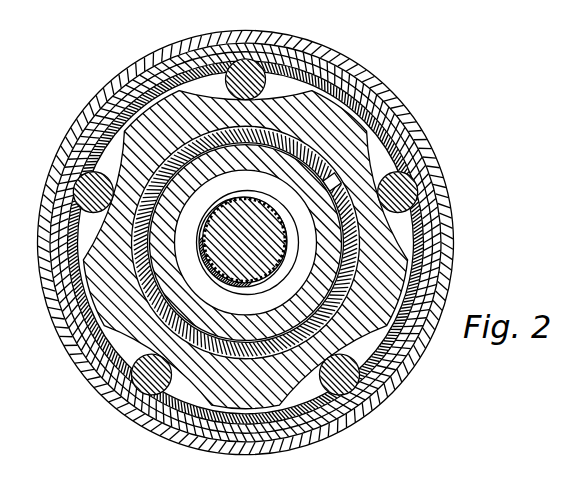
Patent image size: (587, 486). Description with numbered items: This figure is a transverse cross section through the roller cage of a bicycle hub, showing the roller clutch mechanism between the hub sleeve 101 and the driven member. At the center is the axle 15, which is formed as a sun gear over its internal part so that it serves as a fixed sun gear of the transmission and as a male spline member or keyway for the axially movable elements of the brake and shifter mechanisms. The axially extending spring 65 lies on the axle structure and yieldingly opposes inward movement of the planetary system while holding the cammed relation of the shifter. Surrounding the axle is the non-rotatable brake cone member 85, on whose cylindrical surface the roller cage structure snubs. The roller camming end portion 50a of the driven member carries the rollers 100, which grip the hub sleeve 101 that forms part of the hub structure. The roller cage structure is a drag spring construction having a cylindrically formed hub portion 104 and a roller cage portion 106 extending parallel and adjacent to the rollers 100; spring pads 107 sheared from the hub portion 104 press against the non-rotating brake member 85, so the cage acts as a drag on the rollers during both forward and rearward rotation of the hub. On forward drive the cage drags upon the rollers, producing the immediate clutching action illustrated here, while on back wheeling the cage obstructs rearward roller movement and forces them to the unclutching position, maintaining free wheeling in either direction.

The axle 15 is at (277, 257).
The roller camming end portion 50a is at (372, 90).
The spring 65 is at (213, 278).
The brake cone member 85 is at (327, 285).
The rollers 100 is at (250, 70).
The hub sleeve 101 is at (145, 77).
The hub portion 104 is at (350, 217).
The roller cage portion 106 is at (112, 125).
The spring pads 107 is at (332, 172).